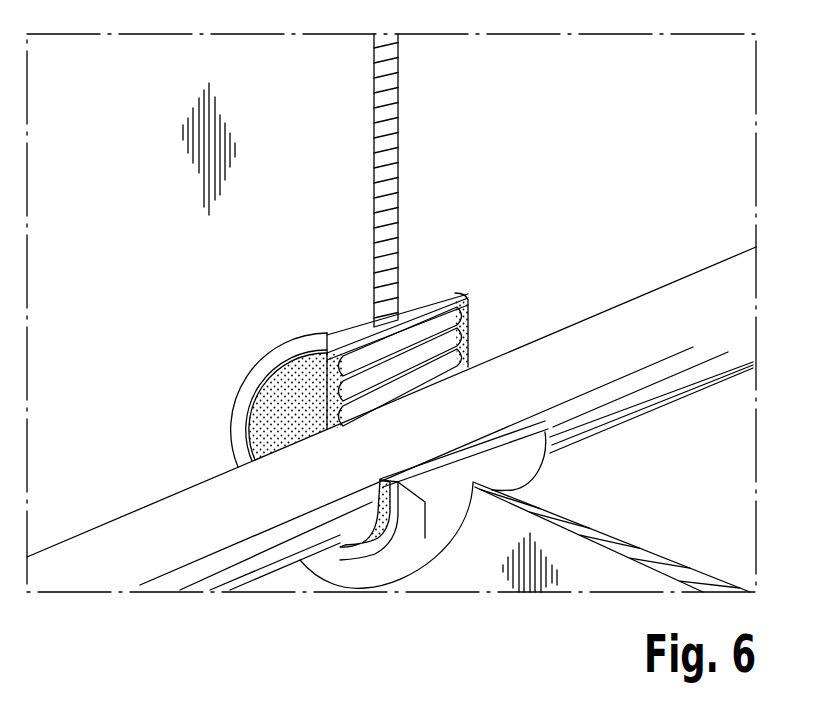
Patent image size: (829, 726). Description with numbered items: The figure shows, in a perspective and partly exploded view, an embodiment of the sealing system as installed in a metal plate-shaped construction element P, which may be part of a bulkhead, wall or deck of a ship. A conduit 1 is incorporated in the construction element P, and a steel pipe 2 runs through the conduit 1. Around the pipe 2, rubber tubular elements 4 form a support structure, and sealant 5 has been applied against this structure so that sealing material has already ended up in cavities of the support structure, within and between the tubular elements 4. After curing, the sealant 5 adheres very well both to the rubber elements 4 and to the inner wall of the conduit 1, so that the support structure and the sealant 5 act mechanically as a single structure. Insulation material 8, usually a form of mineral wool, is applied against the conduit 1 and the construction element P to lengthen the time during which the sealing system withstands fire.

The conduit 1 is at (270, 357).
The pipe 2 is at (213, 510).
The tubular elements 4 is at (430, 356).
The sealant 5 is at (283, 393).
The insulation material 8 is at (360, 332).
The plate-shaped construction element P is at (383, 181).